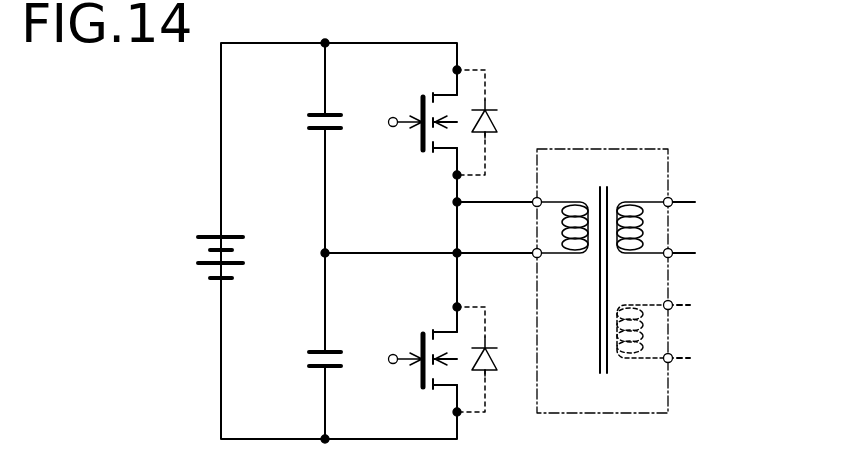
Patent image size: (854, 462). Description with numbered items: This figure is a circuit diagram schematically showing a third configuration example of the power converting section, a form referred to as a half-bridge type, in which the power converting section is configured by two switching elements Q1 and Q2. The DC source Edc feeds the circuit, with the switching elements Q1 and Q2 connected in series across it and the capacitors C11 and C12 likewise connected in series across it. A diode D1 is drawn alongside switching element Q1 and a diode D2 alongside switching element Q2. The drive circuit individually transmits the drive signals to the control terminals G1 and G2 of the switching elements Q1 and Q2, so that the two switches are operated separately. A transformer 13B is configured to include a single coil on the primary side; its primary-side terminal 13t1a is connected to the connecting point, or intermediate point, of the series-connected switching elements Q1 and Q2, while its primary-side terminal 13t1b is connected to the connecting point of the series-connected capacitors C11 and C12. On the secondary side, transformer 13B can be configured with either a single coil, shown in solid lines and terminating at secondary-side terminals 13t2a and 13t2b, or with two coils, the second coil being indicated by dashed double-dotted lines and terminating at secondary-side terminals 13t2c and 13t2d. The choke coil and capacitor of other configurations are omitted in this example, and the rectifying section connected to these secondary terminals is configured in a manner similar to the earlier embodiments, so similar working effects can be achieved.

The DC power supply Edc is at (201, 241).
The capacitor C11 is at (300, 142).
The capacitor C12 is at (300, 343).
The switching element Q1 is at (431, 119).
The switching element Q2 is at (431, 356).
The diode D1 is at (492, 122).
The diode D2 is at (492, 359).
The control terminal G1 is at (389, 124).
The control terminal G2 is at (389, 361).
The transformer 13B is at (590, 148).
The primary-side terminal 13t1a is at (533, 206).
The primary-side terminal 13t1b is at (533, 257).
The secondary winding terminal 13t2a is at (672, 198).
The secondary winding terminal 13t2b is at (672, 249).
The secondary winding terminal 13t2c is at (672, 309).
The secondary winding terminal 13t2d is at (672, 362).